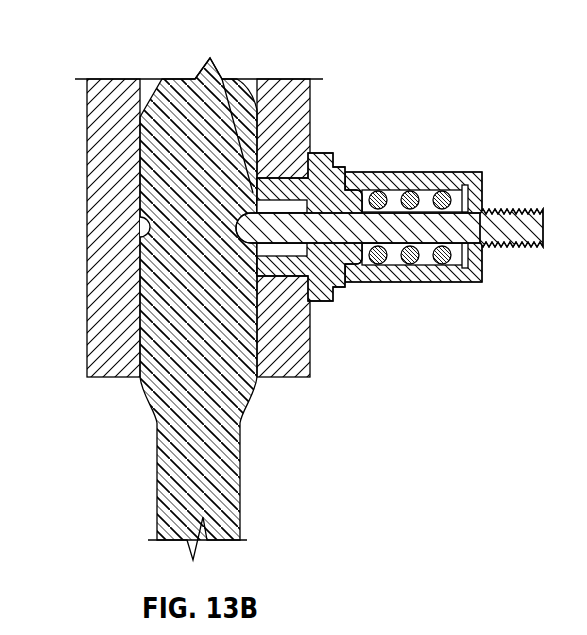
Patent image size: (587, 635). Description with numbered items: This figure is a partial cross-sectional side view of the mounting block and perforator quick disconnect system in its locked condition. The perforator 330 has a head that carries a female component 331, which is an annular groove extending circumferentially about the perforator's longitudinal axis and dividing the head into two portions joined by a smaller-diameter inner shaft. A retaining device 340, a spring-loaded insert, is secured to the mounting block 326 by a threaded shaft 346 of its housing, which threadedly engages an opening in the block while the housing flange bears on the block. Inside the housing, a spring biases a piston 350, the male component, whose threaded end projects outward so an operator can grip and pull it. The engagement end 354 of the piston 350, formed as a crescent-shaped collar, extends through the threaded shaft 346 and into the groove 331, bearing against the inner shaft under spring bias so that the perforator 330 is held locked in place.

The manifold block 326 is at (280, 79).
The perforator 330 is at (148, 457).
The female component 331 is at (176, 254).
The retaining device 340 is at (417, 168).
The threaded shaft 346 is at (287, 178).
The piston 350 is at (425, 243).
The engagement end 354 is at (222, 79).